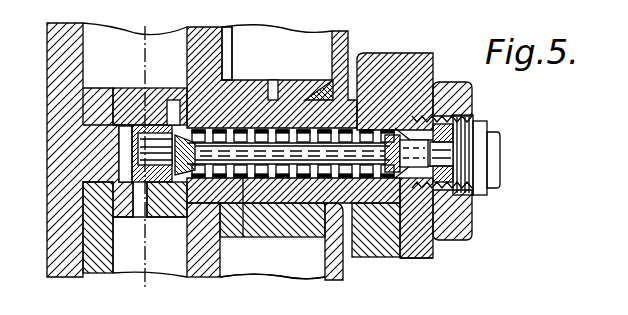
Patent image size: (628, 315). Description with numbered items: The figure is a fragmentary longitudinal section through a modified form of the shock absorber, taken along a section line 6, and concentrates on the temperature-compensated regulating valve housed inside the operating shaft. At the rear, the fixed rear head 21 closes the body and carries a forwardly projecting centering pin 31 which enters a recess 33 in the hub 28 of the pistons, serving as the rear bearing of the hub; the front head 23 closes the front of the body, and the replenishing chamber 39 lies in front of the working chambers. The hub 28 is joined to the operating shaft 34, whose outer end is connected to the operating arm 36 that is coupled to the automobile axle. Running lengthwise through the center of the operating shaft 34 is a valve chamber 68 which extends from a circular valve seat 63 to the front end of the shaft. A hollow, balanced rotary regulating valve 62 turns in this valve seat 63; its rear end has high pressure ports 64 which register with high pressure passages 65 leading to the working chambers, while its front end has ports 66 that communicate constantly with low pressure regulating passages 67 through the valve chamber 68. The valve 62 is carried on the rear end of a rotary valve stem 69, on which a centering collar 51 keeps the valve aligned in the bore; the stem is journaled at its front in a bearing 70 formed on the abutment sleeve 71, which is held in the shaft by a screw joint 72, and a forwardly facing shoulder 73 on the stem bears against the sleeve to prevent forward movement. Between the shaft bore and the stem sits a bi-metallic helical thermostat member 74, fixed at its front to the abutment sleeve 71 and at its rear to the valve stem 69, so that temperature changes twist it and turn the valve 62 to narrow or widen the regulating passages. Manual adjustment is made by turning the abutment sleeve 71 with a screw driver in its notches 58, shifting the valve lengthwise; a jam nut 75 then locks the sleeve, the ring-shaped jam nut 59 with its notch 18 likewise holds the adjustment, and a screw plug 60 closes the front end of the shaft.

The section line 6 is at (145, 159).
The notch 18 is at (440, 156).
The rear head 21 is at (50, 277).
The front head 23 is at (200, 272).
The hub 28 is at (128, 87).
The centering pin 31 is at (100, 133).
The recess 33 is at (83, 182).
The operating shaft 34 is at (244, 203).
The operating arm 36 is at (432, 258).
The replenishing chamber 39 is at (300, 273).
The centering collar 51 is at (180, 190).
The notches 58 is at (492, 143).
The jam nut 59 is at (440, 178).
The screw plug 60 is at (497, 152).
The rotary regulating valve 62 is at (132, 146).
The valve seat 63 is at (152, 126).
The high pressure ports 64 is at (133, 172).
The high pressure passages 65 is at (140, 207).
The ports 66 is at (233, 68).
The low pressure regulating passages 67 is at (169, 100).
The valve chamber 68 is at (250, 97).
The valve stem 69 is at (270, 165).
The bearing 70 is at (400, 237).
The abutment sleeve 71 is at (435, 243).
The screw joint 72 is at (413, 128).
The shoulder 73 is at (364, 133).
The bi-metallic helical thermostat member 74 is at (365, 210).
The jam nut 75 is at (472, 123).